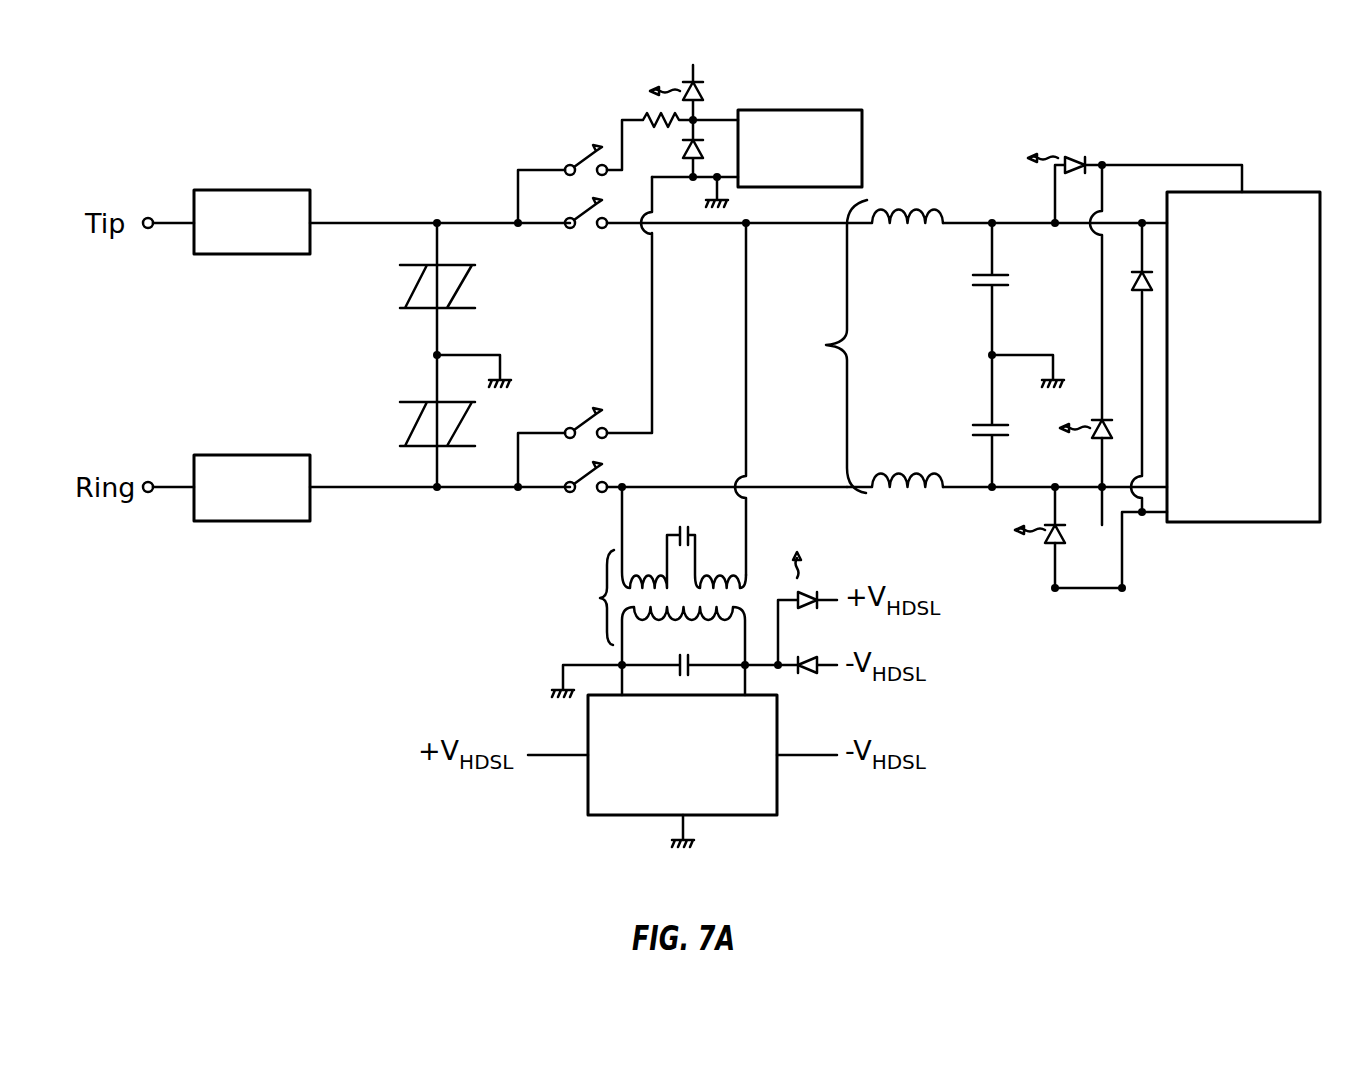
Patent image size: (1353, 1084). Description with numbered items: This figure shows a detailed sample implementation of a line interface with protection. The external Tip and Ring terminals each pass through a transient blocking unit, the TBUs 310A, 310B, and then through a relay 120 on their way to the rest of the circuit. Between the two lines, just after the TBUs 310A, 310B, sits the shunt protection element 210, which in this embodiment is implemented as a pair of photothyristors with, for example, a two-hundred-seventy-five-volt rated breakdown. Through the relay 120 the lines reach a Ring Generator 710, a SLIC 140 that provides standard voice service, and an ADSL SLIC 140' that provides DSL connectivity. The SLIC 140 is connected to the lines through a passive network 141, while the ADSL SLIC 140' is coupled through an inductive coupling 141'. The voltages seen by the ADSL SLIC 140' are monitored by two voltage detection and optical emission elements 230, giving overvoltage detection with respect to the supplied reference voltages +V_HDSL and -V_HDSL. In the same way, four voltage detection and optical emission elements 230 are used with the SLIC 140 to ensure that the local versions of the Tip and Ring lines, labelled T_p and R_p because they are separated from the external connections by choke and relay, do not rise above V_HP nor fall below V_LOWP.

The TBU 310A is at (250, 190).
The TBU 310B is at (252, 521).
The shunt protection element 210 is at (437, 214).
The relay 120 is at (583, 236).
The Ring Generator 710 is at (862, 152).
The passive network 141 is at (839, 387).
The SLIC 140 is at (1167, 364).
The inductive coupling 141' is at (648, 576).
The voltage detection and optical emission elements 230 is at (808, 583).
The ADSL SLIC 140' is at (682, 771).